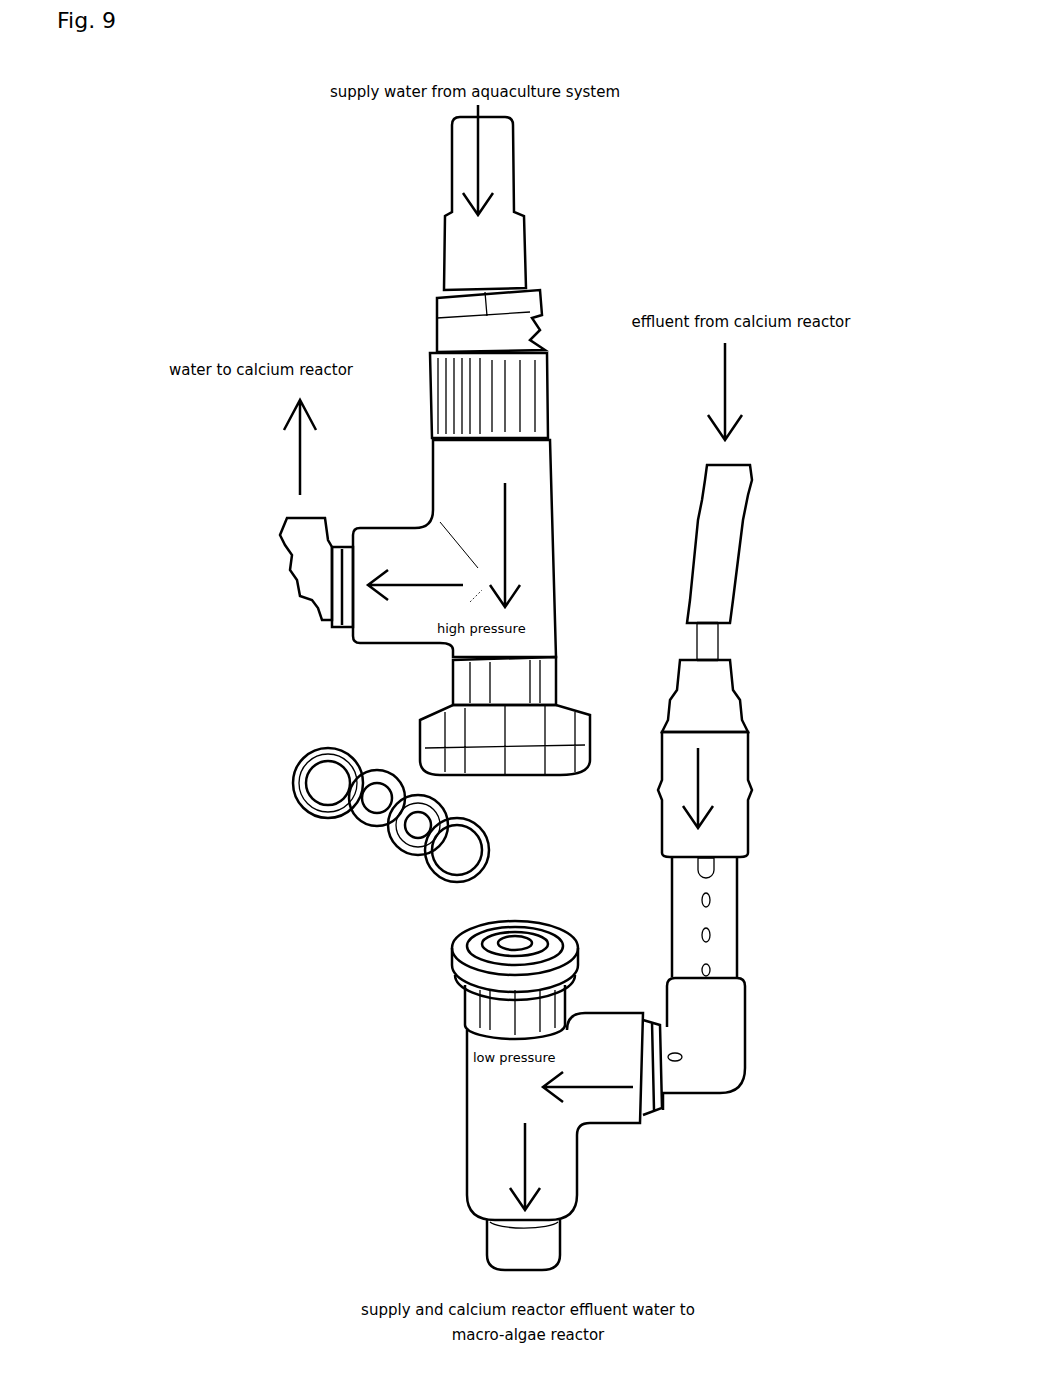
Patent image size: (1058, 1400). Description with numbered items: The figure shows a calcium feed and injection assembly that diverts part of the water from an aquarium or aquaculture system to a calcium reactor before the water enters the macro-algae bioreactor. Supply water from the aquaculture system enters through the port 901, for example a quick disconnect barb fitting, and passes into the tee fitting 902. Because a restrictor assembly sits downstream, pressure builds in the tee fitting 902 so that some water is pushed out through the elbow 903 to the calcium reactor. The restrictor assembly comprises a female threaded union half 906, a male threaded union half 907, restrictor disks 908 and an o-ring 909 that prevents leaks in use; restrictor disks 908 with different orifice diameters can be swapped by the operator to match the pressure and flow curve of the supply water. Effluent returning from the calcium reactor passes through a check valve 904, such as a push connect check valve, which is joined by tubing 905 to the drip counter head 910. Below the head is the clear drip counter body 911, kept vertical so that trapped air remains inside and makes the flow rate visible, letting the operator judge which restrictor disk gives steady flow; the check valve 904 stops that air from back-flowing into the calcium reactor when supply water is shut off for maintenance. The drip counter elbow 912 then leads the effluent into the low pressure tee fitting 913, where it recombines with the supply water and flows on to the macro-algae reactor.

The port 901 is at (545, 220).
The tee fitting 902 is at (560, 434).
The elbow 903 is at (267, 563).
The check valve 904 is at (763, 556).
The tubing 905 is at (728, 641).
The female threaded union half 906 is at (420, 702).
The male threaded union half 907 is at (455, 1012).
The restrictor disks 908 is at (458, 942).
The o-ring 909 is at (560, 935).
The drip counter head 910 is at (768, 780).
The drip counter body 911 is at (755, 920).
The drip counter elbow 912 is at (762, 1070).
The tee fitting 913 is at (602, 1148).